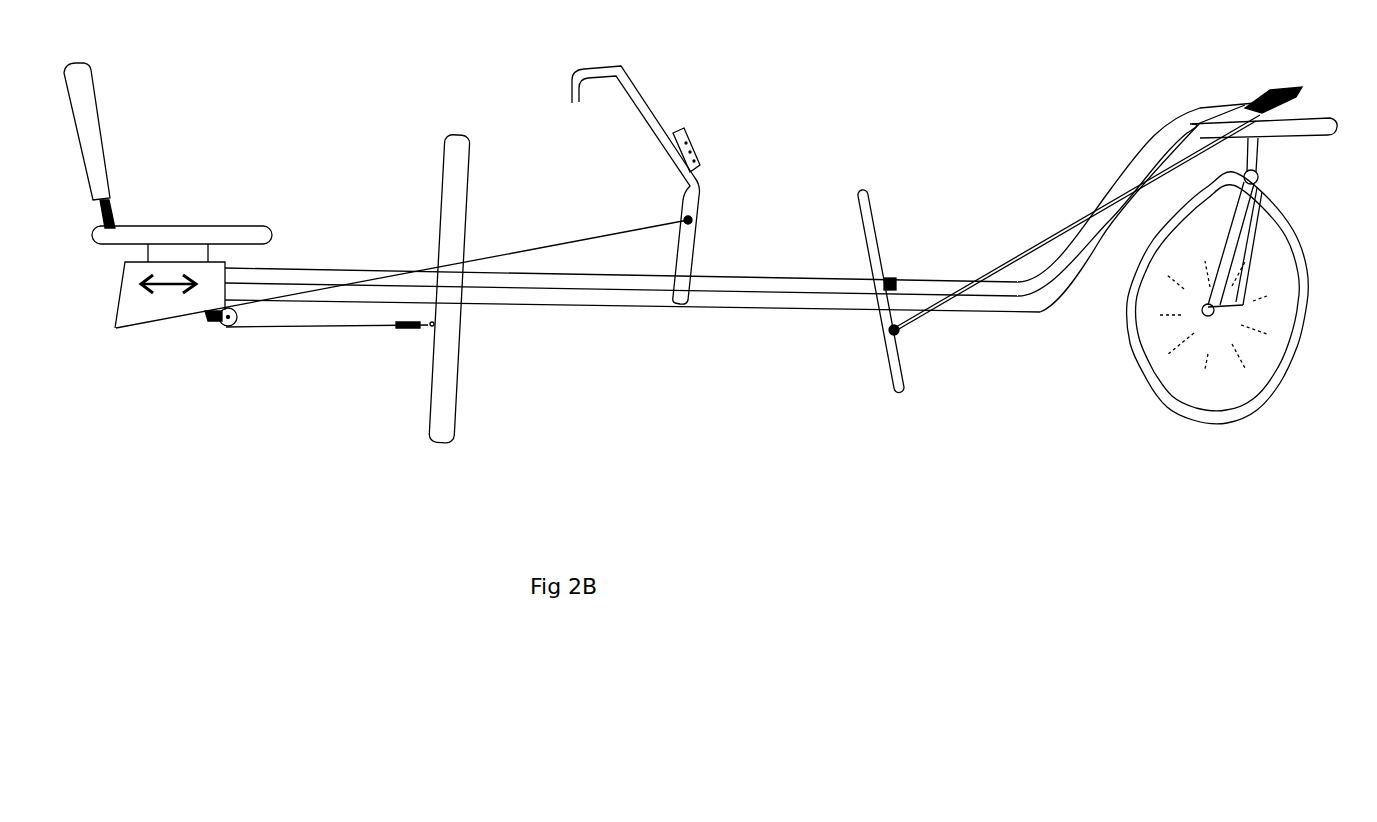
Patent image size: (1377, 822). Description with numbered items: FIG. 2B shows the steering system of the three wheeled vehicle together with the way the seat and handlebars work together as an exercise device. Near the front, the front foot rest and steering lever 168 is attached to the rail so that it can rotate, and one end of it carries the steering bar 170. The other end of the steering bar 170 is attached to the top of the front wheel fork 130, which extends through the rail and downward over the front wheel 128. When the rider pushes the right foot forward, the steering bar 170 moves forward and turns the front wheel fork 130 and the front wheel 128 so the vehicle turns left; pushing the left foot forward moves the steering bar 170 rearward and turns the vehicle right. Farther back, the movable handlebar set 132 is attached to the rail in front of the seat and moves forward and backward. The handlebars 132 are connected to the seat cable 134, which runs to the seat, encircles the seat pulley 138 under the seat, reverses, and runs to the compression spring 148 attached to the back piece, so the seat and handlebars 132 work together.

The front wheel 128 is at (1255, 402).
The front wheel fork 130 is at (1258, 158).
The movable handlebar set 132 is at (651, 113).
The seat cable 134 is at (597, 237).
The seat pulley 138 is at (168, 243).
The compression spring 148 is at (740, 273).
The front foot rest and steering lever 168 is at (900, 395).
The steering bar 170 is at (1043, 237).